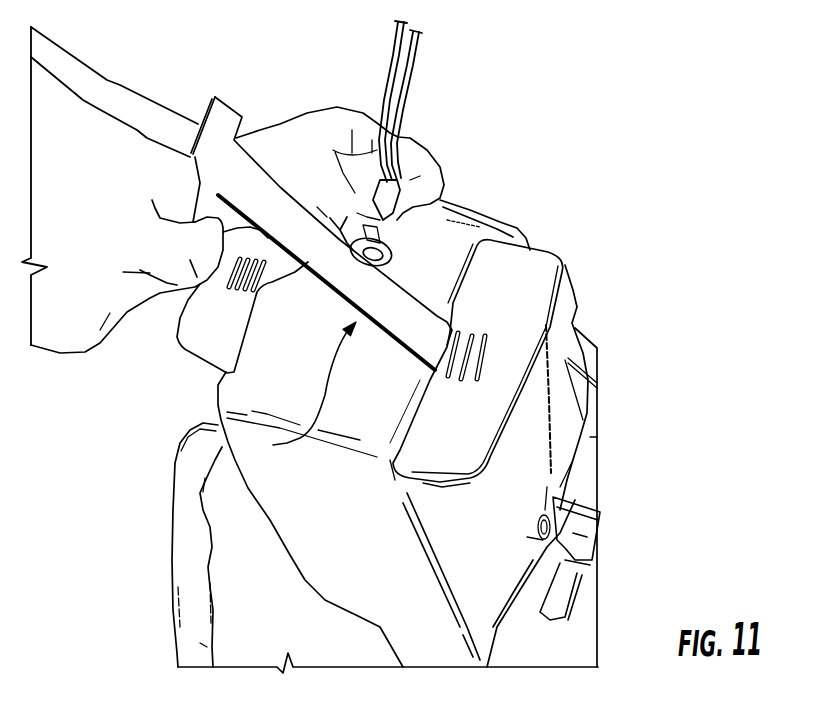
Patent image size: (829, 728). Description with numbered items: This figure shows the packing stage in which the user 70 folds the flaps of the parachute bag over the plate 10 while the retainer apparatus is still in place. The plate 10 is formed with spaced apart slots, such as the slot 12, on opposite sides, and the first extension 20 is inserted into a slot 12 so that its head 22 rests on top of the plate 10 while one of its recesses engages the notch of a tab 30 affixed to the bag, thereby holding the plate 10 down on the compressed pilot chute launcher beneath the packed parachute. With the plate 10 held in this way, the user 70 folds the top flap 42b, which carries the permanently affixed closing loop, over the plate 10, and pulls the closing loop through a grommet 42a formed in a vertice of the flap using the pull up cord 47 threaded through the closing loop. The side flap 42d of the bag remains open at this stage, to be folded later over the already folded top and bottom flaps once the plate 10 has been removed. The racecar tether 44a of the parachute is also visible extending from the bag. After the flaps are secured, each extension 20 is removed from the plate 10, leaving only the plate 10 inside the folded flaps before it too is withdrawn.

The plate 10 is at (513, 365).
The slot 12 is at (568, 248).
The first extension 20 is at (302, 394).
The head 22 is at (190, 155).
The tab 30 is at (568, 537).
The grommet 42a is at (598, 612).
The top flap of parachute bag 42b is at (458, 220).
The side flap of parachute bag 42d is at (527, 478).
The racecar tether 44a is at (192, 633).
The pull up cord 47 is at (408, 72).
The user (human) 70 is at (327, 133).